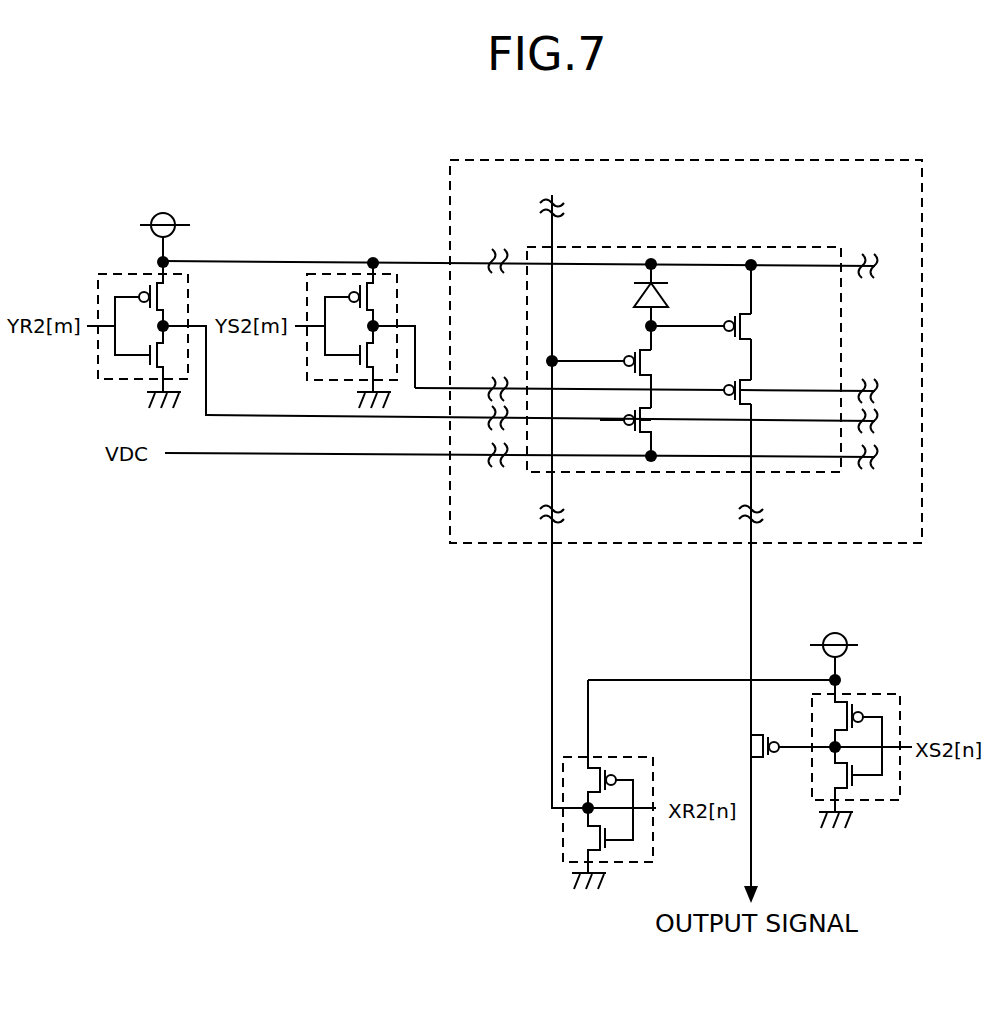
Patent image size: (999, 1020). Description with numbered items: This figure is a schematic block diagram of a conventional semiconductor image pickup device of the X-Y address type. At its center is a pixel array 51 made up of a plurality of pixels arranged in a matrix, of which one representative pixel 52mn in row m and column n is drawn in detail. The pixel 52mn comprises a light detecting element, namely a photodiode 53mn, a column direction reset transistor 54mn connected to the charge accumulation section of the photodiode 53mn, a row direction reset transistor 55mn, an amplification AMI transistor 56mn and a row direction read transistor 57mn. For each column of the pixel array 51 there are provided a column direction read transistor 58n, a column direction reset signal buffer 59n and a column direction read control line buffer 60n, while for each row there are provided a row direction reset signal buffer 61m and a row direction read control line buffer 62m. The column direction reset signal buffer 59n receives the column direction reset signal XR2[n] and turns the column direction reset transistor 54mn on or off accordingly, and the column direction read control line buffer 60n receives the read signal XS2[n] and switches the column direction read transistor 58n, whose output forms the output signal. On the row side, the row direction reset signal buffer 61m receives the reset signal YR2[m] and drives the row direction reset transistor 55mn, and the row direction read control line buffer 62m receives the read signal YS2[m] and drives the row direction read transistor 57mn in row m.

The pixel array 51 is at (870, 160).
The pixel 52mn is at (765, 247).
The light detecting element (photodiode) 53mn is at (668, 294).
The column direction reset transistor 54mn is at (645, 368).
The row direction reset transistor 55mn is at (646, 431).
The amplification AMI transistor 56mn is at (742, 332).
The row direction read transistor 57mn is at (746, 399).
The column direction read transistor 58n is at (758, 754).
The column direction reset signal buffer 59n is at (654, 765).
The column direction read control line buffer 60n is at (902, 700).
The row direction reset signal buffer 61m is at (100, 272).
The row direction read control line buffer 62m is at (335, 271).